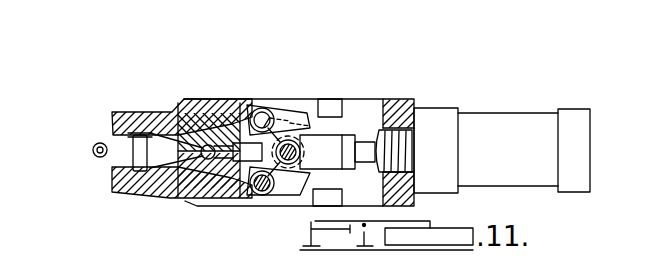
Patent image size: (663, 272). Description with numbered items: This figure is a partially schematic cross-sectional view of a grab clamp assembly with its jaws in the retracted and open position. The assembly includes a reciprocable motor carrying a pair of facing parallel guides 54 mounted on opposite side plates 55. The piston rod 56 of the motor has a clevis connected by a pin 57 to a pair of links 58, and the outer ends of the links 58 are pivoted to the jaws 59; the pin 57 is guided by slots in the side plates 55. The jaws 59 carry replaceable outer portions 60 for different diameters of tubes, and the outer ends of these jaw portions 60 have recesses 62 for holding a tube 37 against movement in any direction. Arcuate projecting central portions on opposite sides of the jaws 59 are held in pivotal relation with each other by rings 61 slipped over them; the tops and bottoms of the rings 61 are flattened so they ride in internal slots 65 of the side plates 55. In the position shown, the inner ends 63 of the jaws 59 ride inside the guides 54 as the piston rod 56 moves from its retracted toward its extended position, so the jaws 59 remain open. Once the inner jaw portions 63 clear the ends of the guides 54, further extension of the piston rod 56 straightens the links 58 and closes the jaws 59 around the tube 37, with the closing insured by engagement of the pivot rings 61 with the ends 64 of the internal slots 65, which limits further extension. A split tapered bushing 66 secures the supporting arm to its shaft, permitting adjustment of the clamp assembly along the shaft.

The tube 37 is at (93, 150).
The guides 54 is at (298, 103).
The side plates 55 is at (498, 122).
The piston rod 56 is at (372, 152).
The pin 57 is at (302, 151).
The links 58 is at (265, 110).
The jaws 59 is at (212, 112).
The replaceable outer portions 60 is at (116, 111).
The rings 61 is at (138, 198).
The recesses 62 is at (130, 152).
The inner ends of jaws 63 is at (312, 106).
The ends of internal slots 64 is at (157, 140).
The internal slots 65 is at (172, 135).
The split tapered bushing 66 is at (248, 200).